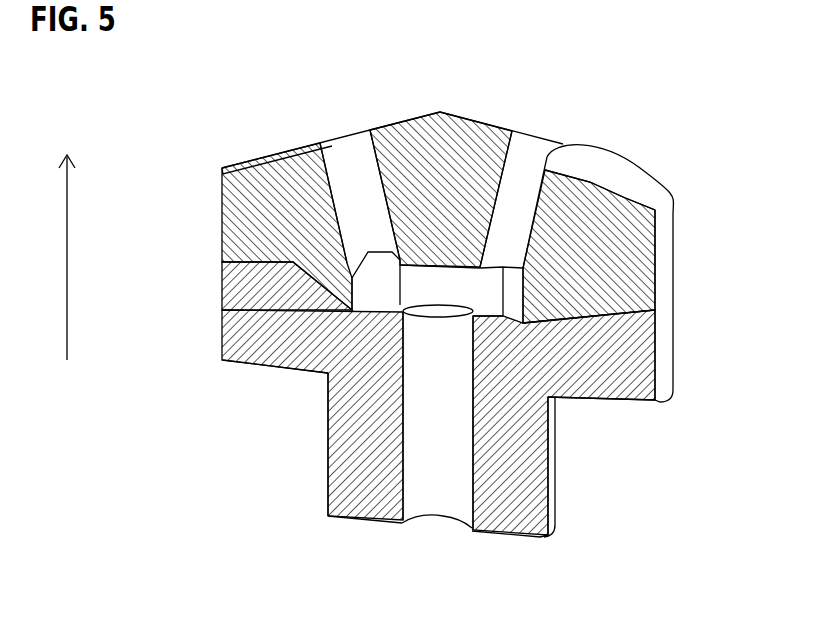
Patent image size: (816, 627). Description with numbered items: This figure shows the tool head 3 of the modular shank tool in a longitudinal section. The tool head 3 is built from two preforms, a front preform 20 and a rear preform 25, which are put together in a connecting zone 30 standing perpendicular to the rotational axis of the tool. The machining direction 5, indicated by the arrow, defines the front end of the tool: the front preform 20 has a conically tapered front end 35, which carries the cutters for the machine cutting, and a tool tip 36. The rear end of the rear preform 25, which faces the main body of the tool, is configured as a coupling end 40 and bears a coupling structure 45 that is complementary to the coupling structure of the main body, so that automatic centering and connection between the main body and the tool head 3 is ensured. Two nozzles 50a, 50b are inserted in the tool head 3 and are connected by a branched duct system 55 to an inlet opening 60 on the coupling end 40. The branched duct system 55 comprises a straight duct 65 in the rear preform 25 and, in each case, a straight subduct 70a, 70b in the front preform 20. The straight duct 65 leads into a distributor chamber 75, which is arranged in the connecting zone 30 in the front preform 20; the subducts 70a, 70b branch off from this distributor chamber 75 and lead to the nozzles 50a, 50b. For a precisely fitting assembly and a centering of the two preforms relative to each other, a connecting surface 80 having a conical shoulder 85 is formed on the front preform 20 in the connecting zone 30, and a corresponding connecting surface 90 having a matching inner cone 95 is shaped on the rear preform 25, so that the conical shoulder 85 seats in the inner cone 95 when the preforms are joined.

The tool head 3 is at (677, 90).
The machining direction 5 is at (64, 247).
The front preform 20 is at (674, 230).
The rear preform 25 is at (673, 372).
The connecting zone 30 is at (660, 314).
The front end 35 is at (482, 98).
The tool tip 36 is at (441, 111).
The coupling end 40 is at (588, 540).
The coupling structure 45 is at (555, 462).
The nozzle 50a is at (355, 136).
The nozzle 50b is at (531, 148).
The branched duct system 55 is at (425, 420).
The inlet opening 60 is at (435, 527).
The straight duct 65 is at (422, 503).
The straight subduct 70a is at (333, 148).
The straight subduct 70b is at (550, 170).
The distributor chamber 75 is at (352, 262).
The connecting surface 80 is at (655, 290).
The conical shoulder 85 is at (437, 288).
The connecting surface 90 is at (656, 336).
The inner cone 95 is at (330, 310).